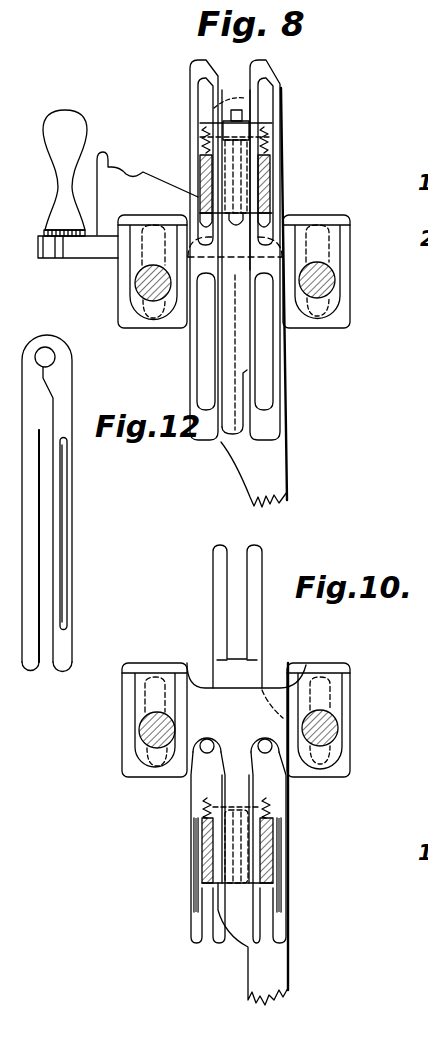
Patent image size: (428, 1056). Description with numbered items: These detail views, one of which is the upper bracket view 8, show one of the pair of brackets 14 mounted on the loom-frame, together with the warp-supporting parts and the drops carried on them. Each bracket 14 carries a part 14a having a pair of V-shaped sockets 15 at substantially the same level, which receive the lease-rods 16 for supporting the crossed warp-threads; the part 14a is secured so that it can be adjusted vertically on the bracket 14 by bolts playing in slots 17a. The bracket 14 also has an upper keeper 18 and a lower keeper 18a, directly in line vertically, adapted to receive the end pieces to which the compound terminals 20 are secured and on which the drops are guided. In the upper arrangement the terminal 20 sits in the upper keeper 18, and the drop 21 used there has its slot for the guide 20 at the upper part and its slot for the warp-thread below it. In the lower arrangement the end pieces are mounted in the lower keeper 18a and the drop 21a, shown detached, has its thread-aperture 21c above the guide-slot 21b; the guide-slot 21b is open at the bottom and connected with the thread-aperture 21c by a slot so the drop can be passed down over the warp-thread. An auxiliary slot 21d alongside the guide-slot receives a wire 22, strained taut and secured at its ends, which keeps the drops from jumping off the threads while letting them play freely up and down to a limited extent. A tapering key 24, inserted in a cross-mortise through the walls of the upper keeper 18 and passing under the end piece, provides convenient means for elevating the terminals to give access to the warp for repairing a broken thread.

In FIG. 8, the coupling head 8 is at (40, 295).
In FIG. 10, the coupling head 8 is at (80, 747).
In FIG. 8, the bracket 14 is at (278, 448).
In FIG. 10, the bracket 14 is at (277, 970).
In FIG. 8, the socket part 14a is at (347, 250).
In FIG. 10, the socket part 14a is at (347, 697).
In FIG. 8, the socket 15 is at (332, 305).
In FIG. 10, the socket 15 is at (140, 757).
In FIG. 8, the lease-rod 16 is at (137, 278).
In FIG. 10, the lease-rod 16 is at (410, 738).
In FIG. 10, the slot 17a is at (318, 680).
In FIG. 8, the upper keeper 18 is at (236, 154).
In FIG. 10, the upper keeper 18 is at (240, 613).
In FIG. 8, the lower keeper 18a is at (237, 425).
In FIG. 8, the compound terminal 20 is at (212, 167).
In FIG. 10, the compound terminal 20 is at (210, 851).
In FIG. 8, the drop 21 is at (190, 110).
In FIG. 12, the drop 21a is at (67, 387).
In FIG. 10, the drop 21a is at (296, 794).
In FIG. 12, the guide-slot 21b is at (45, 536).
In FIG. 12, the thread-aperture 21c is at (45, 352).
In FIG. 12, the auxiliary slot 21d is at (63, 490).
In FIG. 10, the wire 22 is at (197, 880).
In FIG. 8, the tapering key 24 is at (118, 184).